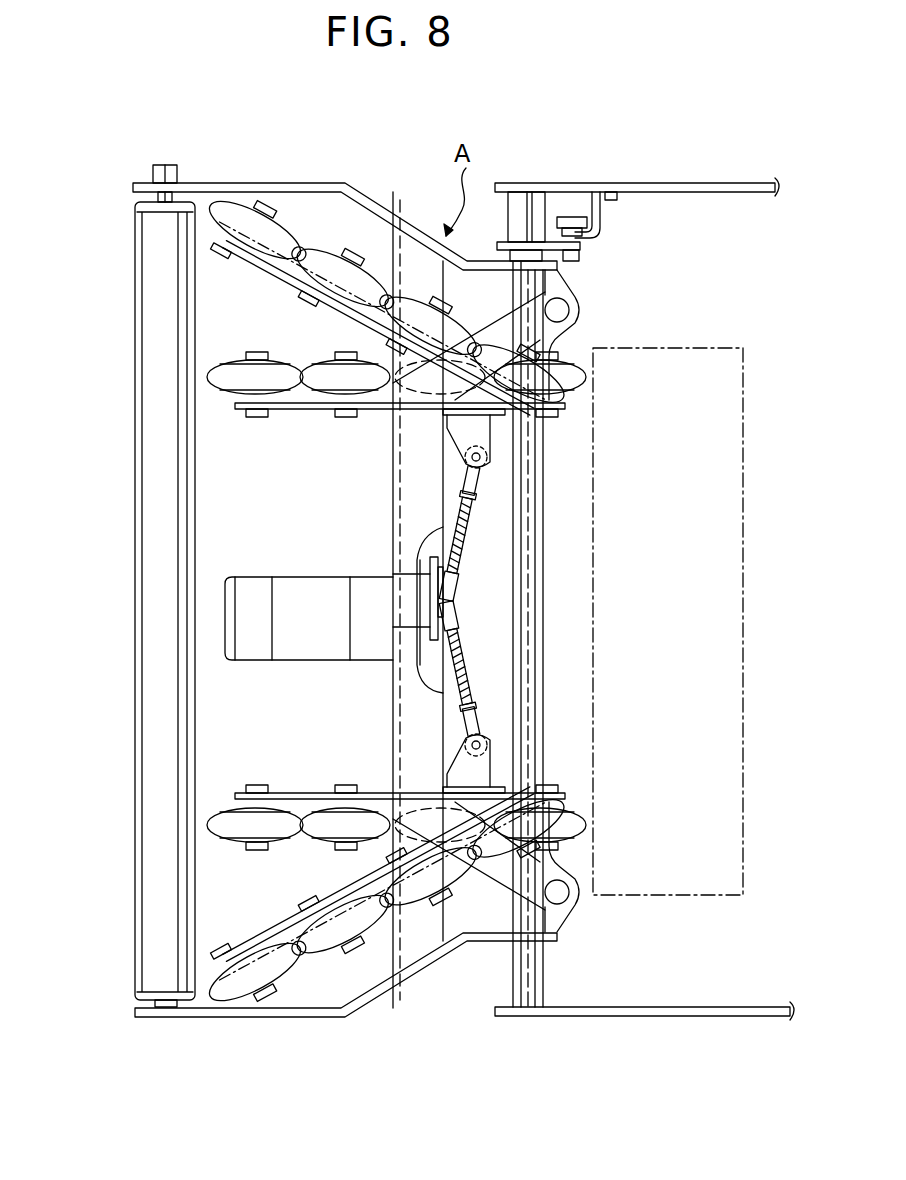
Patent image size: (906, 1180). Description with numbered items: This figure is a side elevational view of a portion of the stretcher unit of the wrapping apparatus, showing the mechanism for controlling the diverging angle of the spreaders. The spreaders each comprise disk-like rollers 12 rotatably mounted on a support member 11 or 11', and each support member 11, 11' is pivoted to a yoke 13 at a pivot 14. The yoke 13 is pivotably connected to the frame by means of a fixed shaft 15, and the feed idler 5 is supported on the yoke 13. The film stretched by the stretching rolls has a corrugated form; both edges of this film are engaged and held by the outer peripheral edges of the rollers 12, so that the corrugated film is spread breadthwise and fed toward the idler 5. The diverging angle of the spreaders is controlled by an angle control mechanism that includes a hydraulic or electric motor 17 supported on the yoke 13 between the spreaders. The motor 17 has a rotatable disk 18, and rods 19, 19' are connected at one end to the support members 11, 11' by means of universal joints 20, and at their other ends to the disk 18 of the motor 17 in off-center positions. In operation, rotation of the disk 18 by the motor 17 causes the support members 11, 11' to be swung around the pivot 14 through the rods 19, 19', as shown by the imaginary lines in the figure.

The feed idler 5 is at (150, 810).
The support member 11 is at (400, 437).
The support member 11' is at (400, 774).
The disk-like rollers 12 is at (282, 377).
The yoke 13 is at (268, 1018).
The pivot 14 is at (557, 311).
The fixed shaft 15 is at (527, 678).
The motor 17 is at (310, 594).
The rotatable disk 18 is at (420, 680).
The rod 19 is at (475, 533).
The rod 19' is at (478, 668).
The universal joints 20 is at (482, 455).